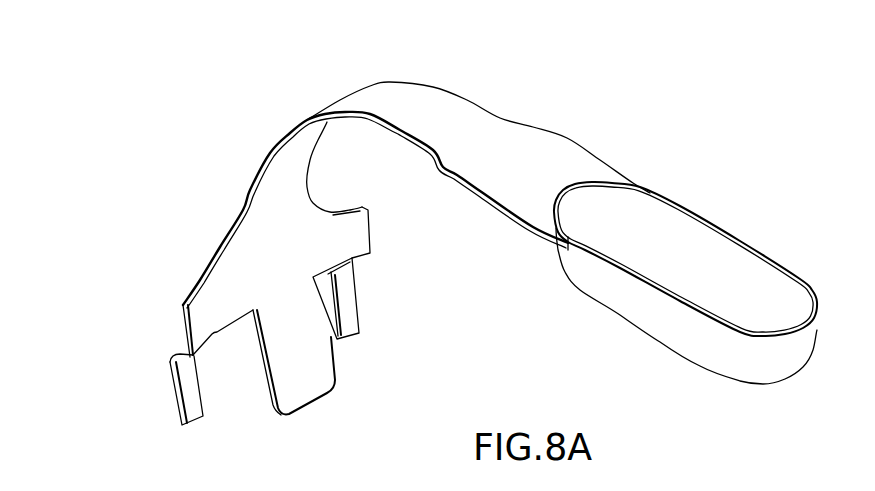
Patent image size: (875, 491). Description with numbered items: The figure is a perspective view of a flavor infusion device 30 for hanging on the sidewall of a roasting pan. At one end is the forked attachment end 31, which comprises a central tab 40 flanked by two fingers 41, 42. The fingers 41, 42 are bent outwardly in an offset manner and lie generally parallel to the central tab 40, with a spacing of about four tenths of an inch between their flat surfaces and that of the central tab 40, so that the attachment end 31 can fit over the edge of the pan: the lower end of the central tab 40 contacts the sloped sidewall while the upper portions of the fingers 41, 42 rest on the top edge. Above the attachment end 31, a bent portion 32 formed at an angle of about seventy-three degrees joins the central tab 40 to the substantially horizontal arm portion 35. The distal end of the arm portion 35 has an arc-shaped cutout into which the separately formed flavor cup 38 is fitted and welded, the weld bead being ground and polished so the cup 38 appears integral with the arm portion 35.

The flavor infusion device 30 is at (640, 134).
The forked attachment end 31 is at (284, 432).
The bent portion 32 is at (382, 82).
The horizontal arm portion 35 is at (517, 182).
The flavor cup 38 is at (737, 239).
The central tab 40 is at (310, 394).
The finger 41 is at (178, 407).
The finger 42 is at (360, 310).